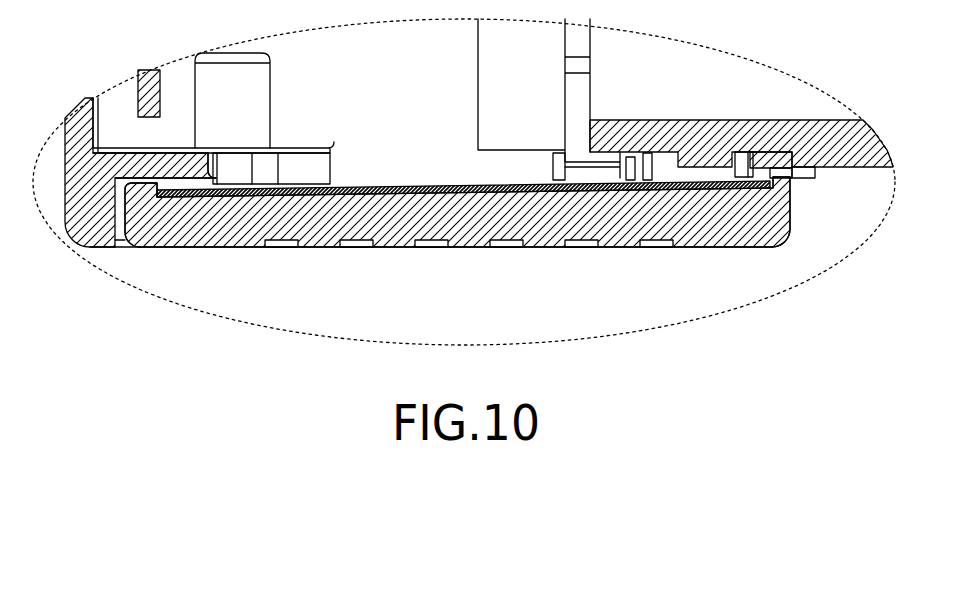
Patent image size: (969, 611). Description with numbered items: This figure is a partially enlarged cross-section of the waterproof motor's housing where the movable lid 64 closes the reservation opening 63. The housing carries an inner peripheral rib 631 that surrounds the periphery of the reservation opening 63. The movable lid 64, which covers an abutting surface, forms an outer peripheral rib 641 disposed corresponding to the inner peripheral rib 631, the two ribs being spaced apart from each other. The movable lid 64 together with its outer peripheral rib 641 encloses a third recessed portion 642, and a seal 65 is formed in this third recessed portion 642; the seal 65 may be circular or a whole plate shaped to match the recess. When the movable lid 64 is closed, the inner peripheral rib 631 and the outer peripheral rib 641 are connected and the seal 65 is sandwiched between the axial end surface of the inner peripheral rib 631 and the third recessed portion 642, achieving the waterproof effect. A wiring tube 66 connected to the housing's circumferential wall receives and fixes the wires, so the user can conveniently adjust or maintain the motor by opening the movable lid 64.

The reservation opening 63 is at (407, 180).
The inner peripheral rib 631 is at (162, 190).
The movable lid 64 is at (600, 215).
The outer peripheral rib 641 is at (137, 183).
The third recessed portion 642 is at (510, 193).
The seal 65 is at (445, 190).
The wiring tube 66 is at (852, 153).